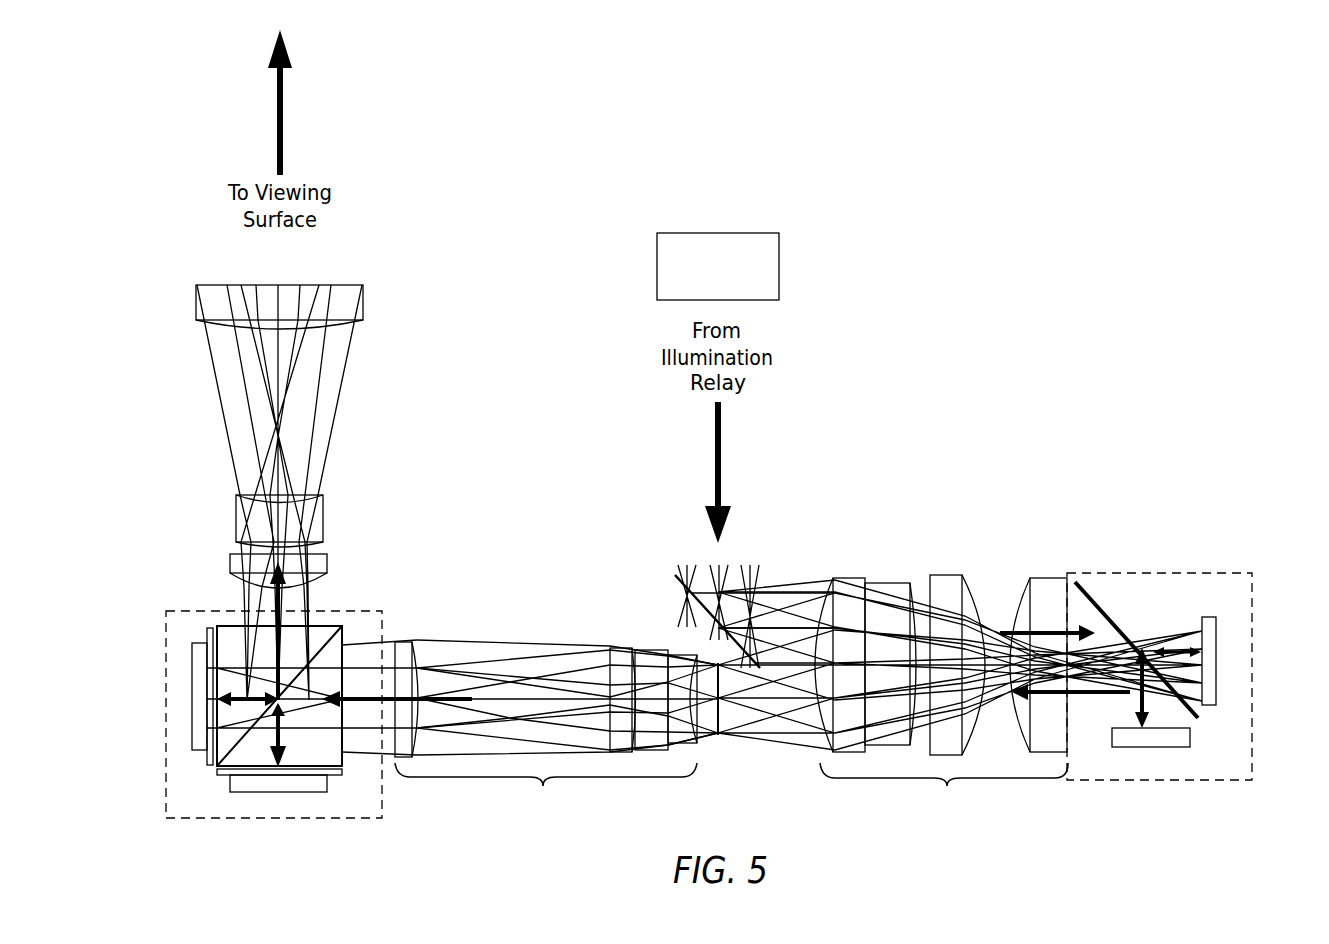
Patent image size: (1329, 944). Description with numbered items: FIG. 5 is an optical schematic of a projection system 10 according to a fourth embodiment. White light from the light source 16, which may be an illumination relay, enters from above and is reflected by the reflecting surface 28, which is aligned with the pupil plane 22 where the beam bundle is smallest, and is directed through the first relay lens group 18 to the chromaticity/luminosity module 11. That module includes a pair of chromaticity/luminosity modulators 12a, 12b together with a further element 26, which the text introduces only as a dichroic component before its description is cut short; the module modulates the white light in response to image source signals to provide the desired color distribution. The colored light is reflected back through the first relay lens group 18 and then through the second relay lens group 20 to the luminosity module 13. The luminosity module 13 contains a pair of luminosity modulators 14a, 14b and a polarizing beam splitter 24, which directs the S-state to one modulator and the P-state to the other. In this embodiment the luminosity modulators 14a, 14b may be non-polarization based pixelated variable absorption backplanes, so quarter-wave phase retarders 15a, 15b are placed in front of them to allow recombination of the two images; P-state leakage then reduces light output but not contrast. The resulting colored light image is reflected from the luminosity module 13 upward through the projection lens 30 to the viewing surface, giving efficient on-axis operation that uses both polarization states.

The projection system 10 is at (1062, 191).
The chromaticity/luminosity module 11 is at (1233, 571).
The chromaticity/luminosity modulator 12a is at (1180, 738).
The chromaticity/luminosity modulator 12b is at (1208, 623).
The luminosity module 13 is at (215, 610).
The luminosity modulator 14a is at (256, 782).
The luminosity modulator 14b is at (200, 650).
The quarter-wave phase retarder 15a is at (335, 777).
The quarter-wave phase retarder 15b is at (201, 758).
The light source 16 is at (760, 263).
The first relay lens group 18 is at (960, 695).
The second relay lens group 20 is at (520, 728).
The pupil plane 22 is at (719, 736).
The polarizing beam splitter 24 is at (370, 630).
The fold mirror 26 is at (1092, 585).
The reflecting surface 28 is at (696, 612).
The projection lens 30 is at (372, 415).